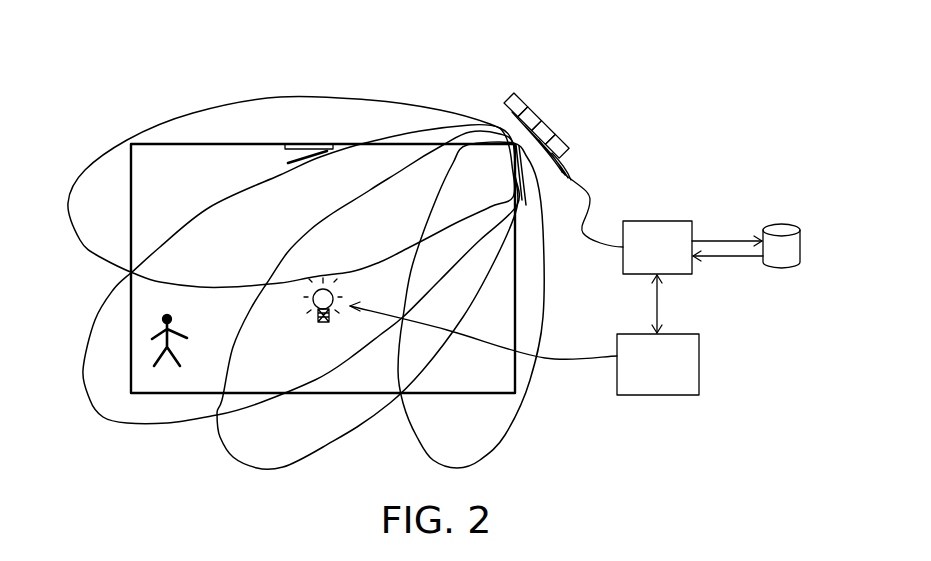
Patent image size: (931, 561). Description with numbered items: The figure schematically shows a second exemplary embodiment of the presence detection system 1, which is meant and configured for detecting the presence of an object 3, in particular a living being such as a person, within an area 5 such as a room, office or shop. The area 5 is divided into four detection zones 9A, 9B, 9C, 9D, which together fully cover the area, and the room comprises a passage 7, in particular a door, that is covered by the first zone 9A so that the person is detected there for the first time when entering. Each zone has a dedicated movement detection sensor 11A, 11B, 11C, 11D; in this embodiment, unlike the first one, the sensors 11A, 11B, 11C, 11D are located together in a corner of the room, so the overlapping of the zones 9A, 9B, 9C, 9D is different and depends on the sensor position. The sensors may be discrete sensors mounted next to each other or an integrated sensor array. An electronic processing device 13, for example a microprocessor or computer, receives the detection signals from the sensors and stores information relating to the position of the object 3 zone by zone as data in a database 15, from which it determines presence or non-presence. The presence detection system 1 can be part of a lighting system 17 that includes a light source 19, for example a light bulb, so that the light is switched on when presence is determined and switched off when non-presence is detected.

The presence detection system 1 is at (661, 137).
The object 3 is at (158, 323).
The area 5 is at (367, 370).
The passage 7 is at (300, 144).
The first detection zone 9A is at (323, 268).
The second detection zone 9B is at (301, 274).
The third detection zone 9C is at (367, 300).
The fourth detection zone 9D is at (471, 305).
The first sensor 11A is at (519, 101).
The second sensor 11B is at (533, 115).
The third sensor 11C is at (547, 129).
The fourth sensor 11D is at (560, 142).
The electronic processing device 13 is at (662, 221).
The database 15 is at (781, 223).
The lighting system 17 is at (699, 372).
The light source 19 is at (322, 324).